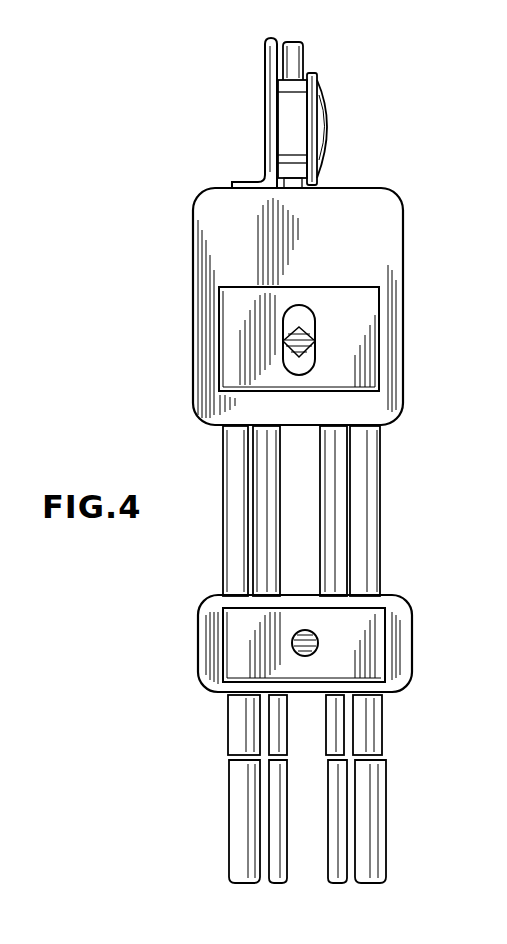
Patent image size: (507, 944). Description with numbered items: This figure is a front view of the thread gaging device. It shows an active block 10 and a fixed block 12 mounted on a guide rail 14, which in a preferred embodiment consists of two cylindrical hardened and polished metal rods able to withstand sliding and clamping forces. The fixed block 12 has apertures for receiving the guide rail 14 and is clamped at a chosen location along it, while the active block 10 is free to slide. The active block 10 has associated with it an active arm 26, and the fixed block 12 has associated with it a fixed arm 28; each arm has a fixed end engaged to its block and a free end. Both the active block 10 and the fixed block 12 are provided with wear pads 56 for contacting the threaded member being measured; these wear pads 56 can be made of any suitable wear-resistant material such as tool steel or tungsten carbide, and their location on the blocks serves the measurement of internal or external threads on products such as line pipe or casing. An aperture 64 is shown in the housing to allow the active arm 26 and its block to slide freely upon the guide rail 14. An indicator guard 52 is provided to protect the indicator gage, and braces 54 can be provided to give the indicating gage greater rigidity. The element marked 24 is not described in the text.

The active block 10 is at (363, 242).
The fixed block 12 is at (388, 628).
The guide rail 14 is at (248, 727).
The locking wheel/ring 24 is at (327, 100).
The active arm 26 is at (308, 353).
The fixed arm 28 is at (322, 648).
The indicator guard 52 is at (268, 93).
The braces 54 is at (280, 780).
The wear pads 56 is at (230, 348).
The aperture 64 is at (313, 315).